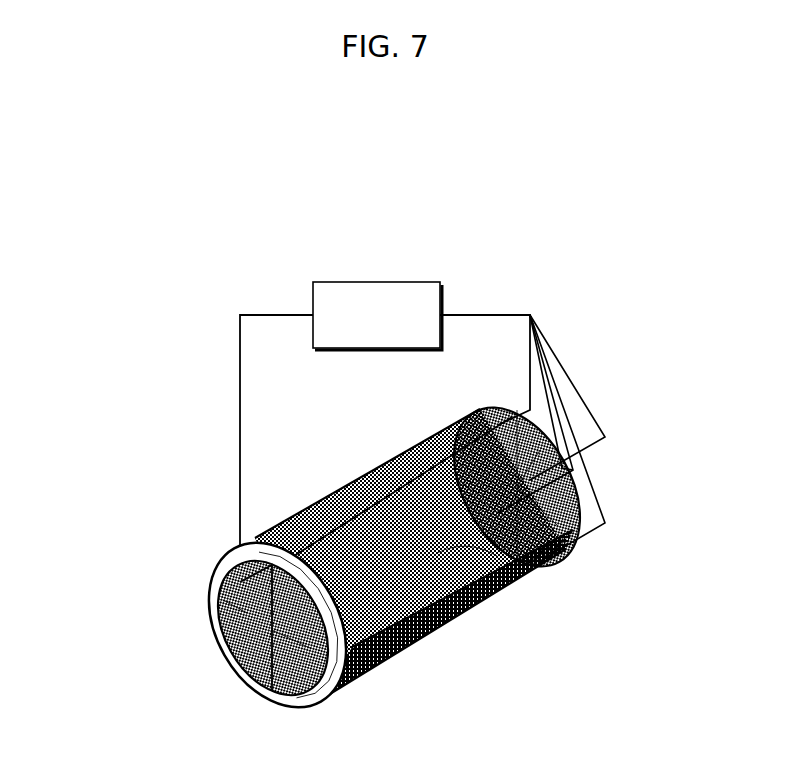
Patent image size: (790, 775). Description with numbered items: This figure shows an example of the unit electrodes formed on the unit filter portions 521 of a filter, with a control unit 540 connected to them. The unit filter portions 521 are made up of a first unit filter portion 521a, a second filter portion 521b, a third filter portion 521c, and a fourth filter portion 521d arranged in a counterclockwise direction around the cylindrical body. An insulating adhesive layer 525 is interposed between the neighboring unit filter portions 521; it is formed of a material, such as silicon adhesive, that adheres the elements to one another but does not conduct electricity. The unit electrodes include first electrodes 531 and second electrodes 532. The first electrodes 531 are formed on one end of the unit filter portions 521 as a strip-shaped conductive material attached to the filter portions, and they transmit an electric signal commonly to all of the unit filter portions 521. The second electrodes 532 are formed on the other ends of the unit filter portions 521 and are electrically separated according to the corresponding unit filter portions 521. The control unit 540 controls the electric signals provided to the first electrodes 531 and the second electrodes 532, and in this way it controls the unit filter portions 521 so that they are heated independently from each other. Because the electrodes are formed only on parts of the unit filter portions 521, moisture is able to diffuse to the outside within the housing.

The control unit 540 is at (388, 282).
The second electrodes 532 is at (575, 387).
The unit filter portions 521 is at (373, 575).
The first unit filter portion 521a is at (370, 472).
The second filter portion 521b is at (535, 569).
The third filter portion 521c is at (417, 648).
The fourth filter portion 521d is at (219, 641).
The first electrodes 531 is at (215, 565).
The insulating adhesive layer 525 is at (218, 613).